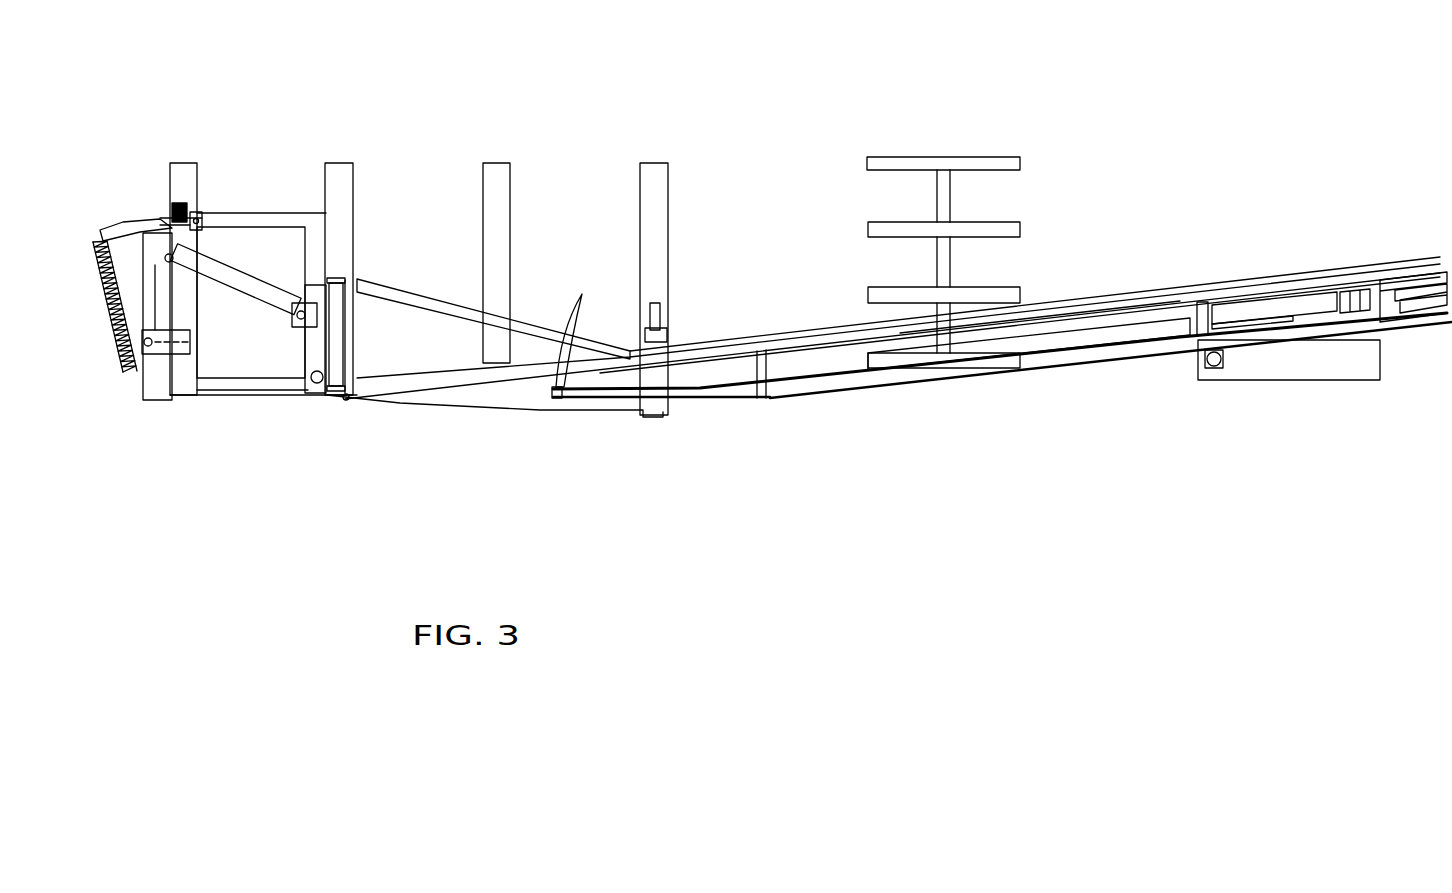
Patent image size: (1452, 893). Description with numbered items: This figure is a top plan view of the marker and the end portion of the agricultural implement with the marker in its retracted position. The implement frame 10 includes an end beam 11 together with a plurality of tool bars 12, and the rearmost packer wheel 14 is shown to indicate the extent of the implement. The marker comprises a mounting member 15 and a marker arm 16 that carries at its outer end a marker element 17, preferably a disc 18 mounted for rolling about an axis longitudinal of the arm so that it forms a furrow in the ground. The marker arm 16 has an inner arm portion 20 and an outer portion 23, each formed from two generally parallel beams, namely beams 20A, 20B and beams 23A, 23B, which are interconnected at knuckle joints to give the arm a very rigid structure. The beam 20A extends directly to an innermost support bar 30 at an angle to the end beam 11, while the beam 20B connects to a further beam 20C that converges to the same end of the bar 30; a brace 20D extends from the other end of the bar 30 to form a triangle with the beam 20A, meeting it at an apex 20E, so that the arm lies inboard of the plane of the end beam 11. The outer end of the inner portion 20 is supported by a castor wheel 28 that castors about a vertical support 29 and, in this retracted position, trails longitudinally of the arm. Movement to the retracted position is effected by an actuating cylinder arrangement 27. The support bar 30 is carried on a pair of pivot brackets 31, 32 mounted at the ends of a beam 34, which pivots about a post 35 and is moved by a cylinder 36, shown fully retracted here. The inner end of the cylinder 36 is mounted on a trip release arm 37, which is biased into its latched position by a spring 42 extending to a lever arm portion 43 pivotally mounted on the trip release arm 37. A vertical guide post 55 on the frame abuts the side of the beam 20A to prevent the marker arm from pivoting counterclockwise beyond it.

The frame 10 is at (373, 168).
The end beam 11 is at (233, 391).
The tool bars 12 is at (198, 178).
The packer wheel 14 is at (940, 132).
The mounting member 15 is at (296, 187).
The marker arm 16 is at (896, 269).
The marker element 17 is at (889, 295).
The disc 18 is at (578, 300).
The inner arm portion 20 is at (889, 339).
The beam 20A is at (838, 330).
The beam 20B is at (890, 386).
The beam 20C is at (500, 410).
The brace 20D is at (420, 296).
The apex 20E is at (586, 332).
The outer portion 23 is at (1102, 305).
The beam 23A is at (1043, 312).
The beam 23B is at (1080, 356).
The actuating cylinder arrangement 27 is at (1265, 302).
The castor wheel 28 is at (1270, 366).
The support 29 is at (1212, 370).
The support bar 30 is at (350, 300).
The pivot bracket 31 is at (347, 402).
The pivot bracket 32 is at (346, 280).
The arm 34 is at (320, 333).
The post 35 is at (316, 386).
The cylinder 36 is at (258, 213).
The trip release arm 37 is at (148, 285).
The spring 42 is at (100, 240).
The lever arm portion 43 is at (135, 227).
The guide post 55 is at (667, 333).